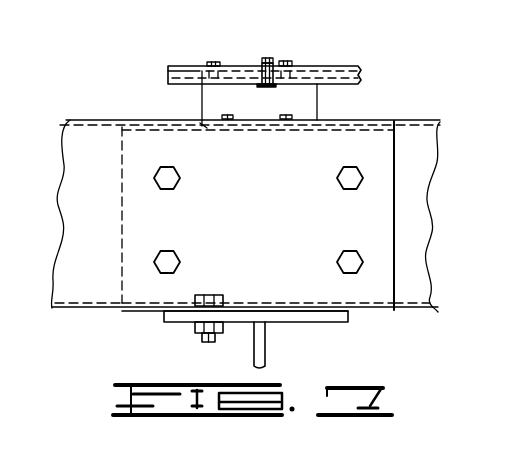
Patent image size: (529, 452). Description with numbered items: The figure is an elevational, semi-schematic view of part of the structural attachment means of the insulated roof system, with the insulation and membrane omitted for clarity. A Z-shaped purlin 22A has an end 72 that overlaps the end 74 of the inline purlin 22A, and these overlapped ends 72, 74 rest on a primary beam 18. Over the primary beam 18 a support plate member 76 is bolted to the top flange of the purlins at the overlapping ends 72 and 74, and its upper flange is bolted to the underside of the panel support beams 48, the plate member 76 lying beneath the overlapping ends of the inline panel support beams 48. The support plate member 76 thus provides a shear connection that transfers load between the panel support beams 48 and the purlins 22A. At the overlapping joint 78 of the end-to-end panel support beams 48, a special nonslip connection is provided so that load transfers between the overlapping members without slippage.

The purlin 22A is at (98, 137).
The purlin end 72 is at (352, 120).
The panel support beam 48 is at (191, 66).
The overlapping joint 78 is at (272, 60).
The support plate member 76 is at (207, 102).
The purlin end 74 is at (128, 312).
The primary beam 18 is at (266, 345).